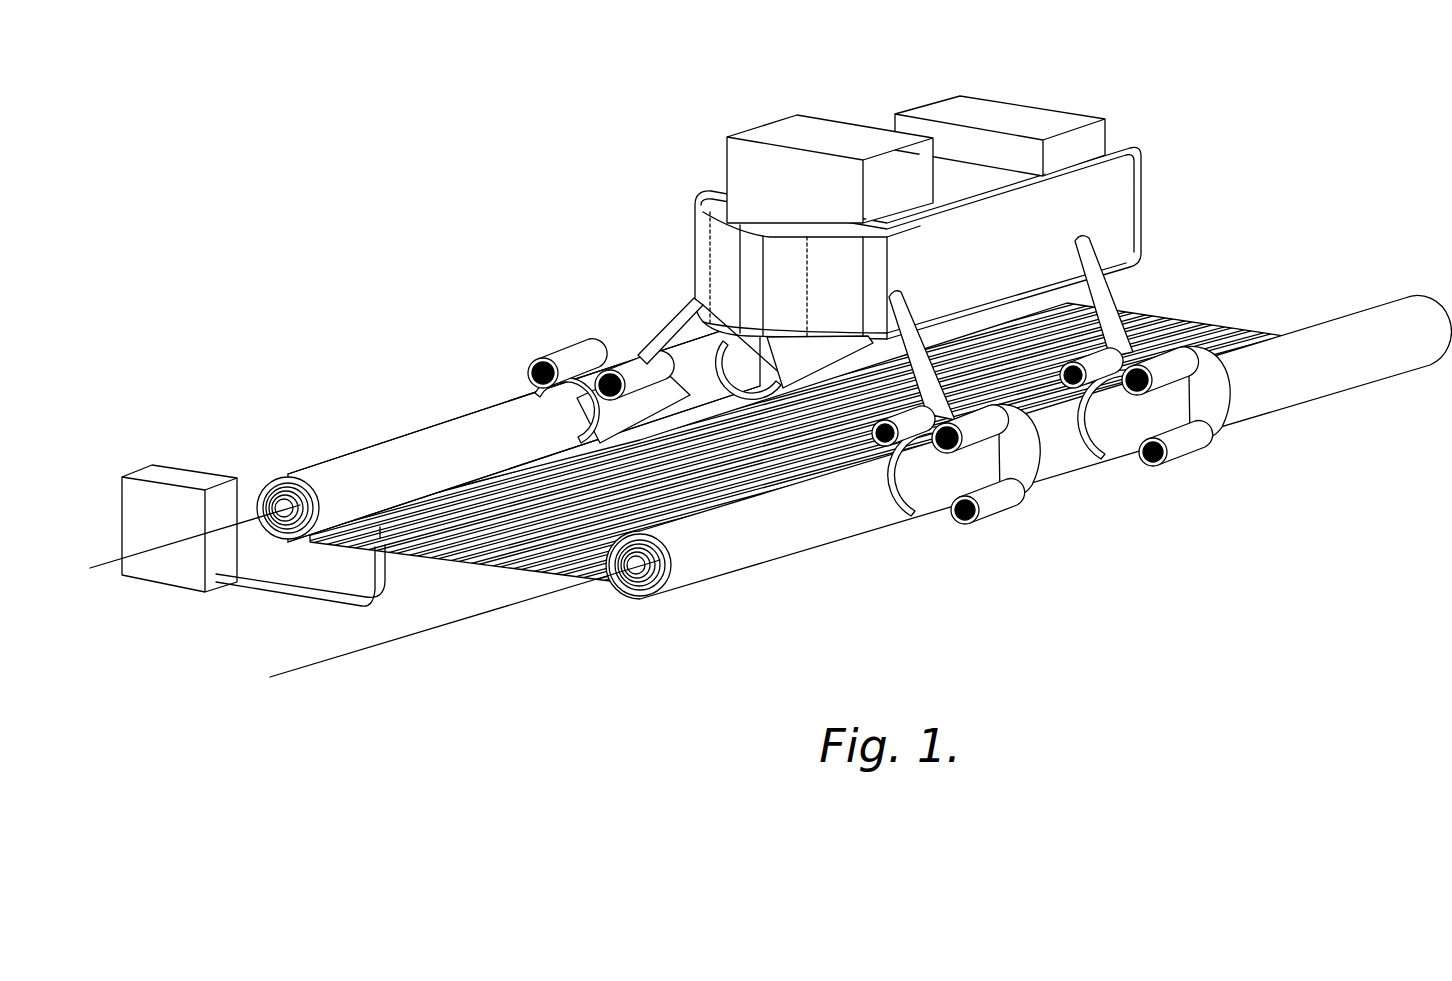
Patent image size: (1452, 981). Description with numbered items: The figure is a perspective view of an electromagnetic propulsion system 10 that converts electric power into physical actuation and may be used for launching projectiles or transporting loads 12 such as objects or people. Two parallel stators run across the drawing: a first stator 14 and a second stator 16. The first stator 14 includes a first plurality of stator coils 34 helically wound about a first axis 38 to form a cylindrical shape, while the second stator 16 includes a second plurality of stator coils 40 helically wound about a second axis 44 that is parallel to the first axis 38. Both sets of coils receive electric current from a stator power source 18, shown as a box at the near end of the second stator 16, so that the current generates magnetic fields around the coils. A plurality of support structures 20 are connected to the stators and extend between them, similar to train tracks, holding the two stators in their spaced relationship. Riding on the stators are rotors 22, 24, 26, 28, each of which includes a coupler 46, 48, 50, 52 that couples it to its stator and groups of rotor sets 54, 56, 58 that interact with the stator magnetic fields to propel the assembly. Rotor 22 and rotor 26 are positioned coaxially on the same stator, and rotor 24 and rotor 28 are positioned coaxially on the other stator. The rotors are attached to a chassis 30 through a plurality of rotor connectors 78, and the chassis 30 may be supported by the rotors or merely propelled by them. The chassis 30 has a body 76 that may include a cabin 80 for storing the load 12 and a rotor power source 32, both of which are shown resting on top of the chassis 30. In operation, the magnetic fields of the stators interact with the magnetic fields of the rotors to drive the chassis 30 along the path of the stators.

The electromagnetic propulsion system 10 is at (668, 98).
The load 12 is at (742, 172).
The first stator 14 is at (738, 582).
The second stator 16 is at (385, 430).
The stator power source 18 is at (242, 542).
The support structures 20 is at (1265, 335).
The rotor 22 is at (1003, 514).
The rotor 24 is at (535, 347).
The rotor 26 is at (1195, 477).
The rotor 28 is at (760, 362).
The chassis 30 is at (974, 243).
The rotor power source 32 is at (1082, 112).
The first plurality of stator coils 34 is at (648, 572).
The first axis 38 is at (375, 648).
The second plurality of stator coils 40 is at (283, 497).
The second axis 44 is at (153, 552).
The coupler 46 is at (930, 522).
The coupler 48 is at (578, 392).
The coupler 50 is at (1193, 436).
The coupler 52 is at (820, 360).
The rotor sets 54 is at (995, 543).
The rotor sets 56 is at (612, 338).
The rotor sets 58 is at (1228, 443).
The body 76 is at (1123, 193).
The rotor connectors 78 is at (683, 310).
The cabin 80 is at (973, 178).